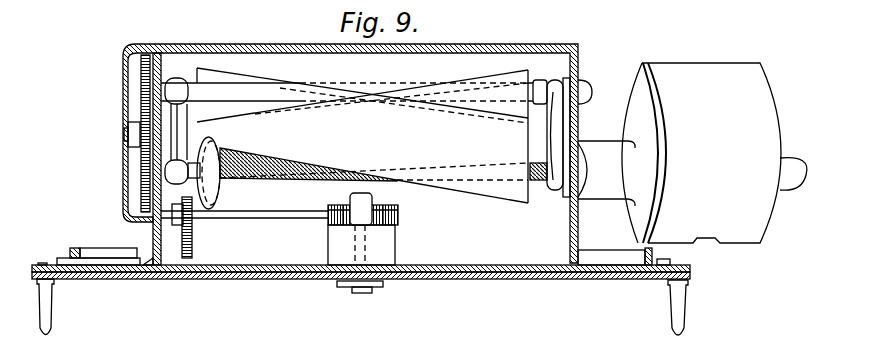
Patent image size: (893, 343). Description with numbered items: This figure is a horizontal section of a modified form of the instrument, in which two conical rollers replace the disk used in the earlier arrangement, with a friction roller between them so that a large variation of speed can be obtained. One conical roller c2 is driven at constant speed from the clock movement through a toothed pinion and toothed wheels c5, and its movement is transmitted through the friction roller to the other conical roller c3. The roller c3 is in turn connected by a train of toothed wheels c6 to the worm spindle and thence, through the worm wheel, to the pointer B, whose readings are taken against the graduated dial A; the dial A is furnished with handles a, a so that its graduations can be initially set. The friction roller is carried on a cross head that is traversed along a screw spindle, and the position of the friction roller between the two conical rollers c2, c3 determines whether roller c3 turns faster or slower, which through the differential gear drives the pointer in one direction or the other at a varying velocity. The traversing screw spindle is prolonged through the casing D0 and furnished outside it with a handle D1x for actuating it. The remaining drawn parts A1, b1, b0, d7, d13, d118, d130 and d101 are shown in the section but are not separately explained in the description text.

The casing A1 is at (200, 46).
The graduated dial A is at (178, 280).
The handles a is at (362, 307).
The pointer B is at (352, 293).
The worm gear b1 is at (393, 213).
The shaft b0 is at (292, 214).
The conical roller c2 is at (508, 190).
The conical roller c3 is at (218, 80).
The toothed wheels c5 is at (142, 163).
The train of toothed wheels c6 is at (170, 242).
The shaft d7 is at (281, 87).
The arm d13 is at (181, 123).
The arm d118 is at (561, 130).
The disc and screw d130 is at (276, 181).
The rack pinion d101 is at (200, 210).
The casing D0 is at (679, 153).
The handle D1x is at (786, 160).